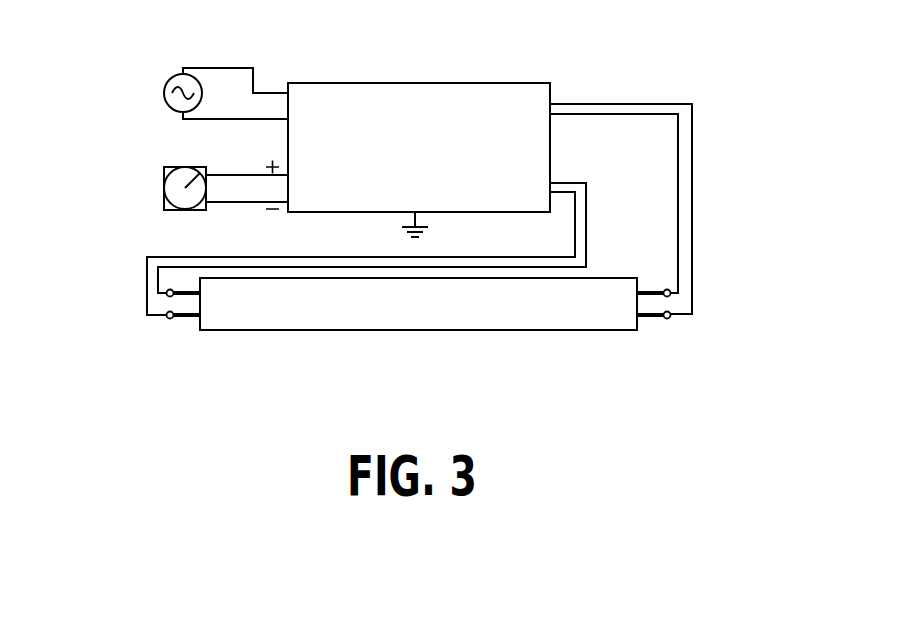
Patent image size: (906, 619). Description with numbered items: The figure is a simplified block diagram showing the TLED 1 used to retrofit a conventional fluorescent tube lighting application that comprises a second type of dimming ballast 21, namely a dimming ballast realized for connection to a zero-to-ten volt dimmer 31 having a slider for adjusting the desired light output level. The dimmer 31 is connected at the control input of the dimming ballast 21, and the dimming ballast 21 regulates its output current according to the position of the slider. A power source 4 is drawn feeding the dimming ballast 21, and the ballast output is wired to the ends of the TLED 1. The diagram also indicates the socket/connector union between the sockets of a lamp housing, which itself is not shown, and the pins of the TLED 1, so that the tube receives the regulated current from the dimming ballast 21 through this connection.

The TLED 1 is at (445, 332).
The AC power source 4 is at (164, 93).
The dimming ballast 21 is at (452, 83).
The dimmer 31 is at (164, 188).